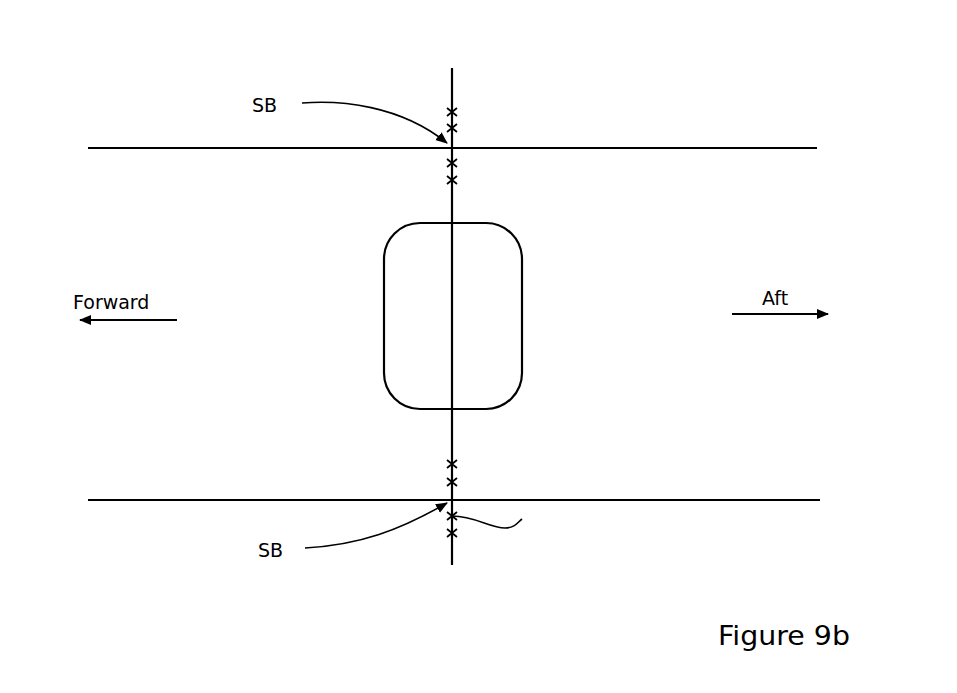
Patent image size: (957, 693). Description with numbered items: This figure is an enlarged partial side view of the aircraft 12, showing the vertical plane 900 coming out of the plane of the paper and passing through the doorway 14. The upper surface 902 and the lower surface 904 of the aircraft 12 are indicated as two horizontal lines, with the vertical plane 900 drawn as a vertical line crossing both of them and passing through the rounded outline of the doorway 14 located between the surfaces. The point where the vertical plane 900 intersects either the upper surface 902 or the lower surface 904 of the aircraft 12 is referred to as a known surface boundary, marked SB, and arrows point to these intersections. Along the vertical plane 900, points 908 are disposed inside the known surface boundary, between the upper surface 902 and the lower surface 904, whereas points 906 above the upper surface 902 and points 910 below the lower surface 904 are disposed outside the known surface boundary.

The vertical plane 900 is at (460, 75).
The upper surface 902 is at (722, 148).
The lower surface 904 is at (728, 500).
The aircraft 12 is at (165, 500).
The doorway 14 is at (522, 357).
The points 906 is at (452, 112).
The points 908 is at (452, 163).
The points 910 is at (452, 533).